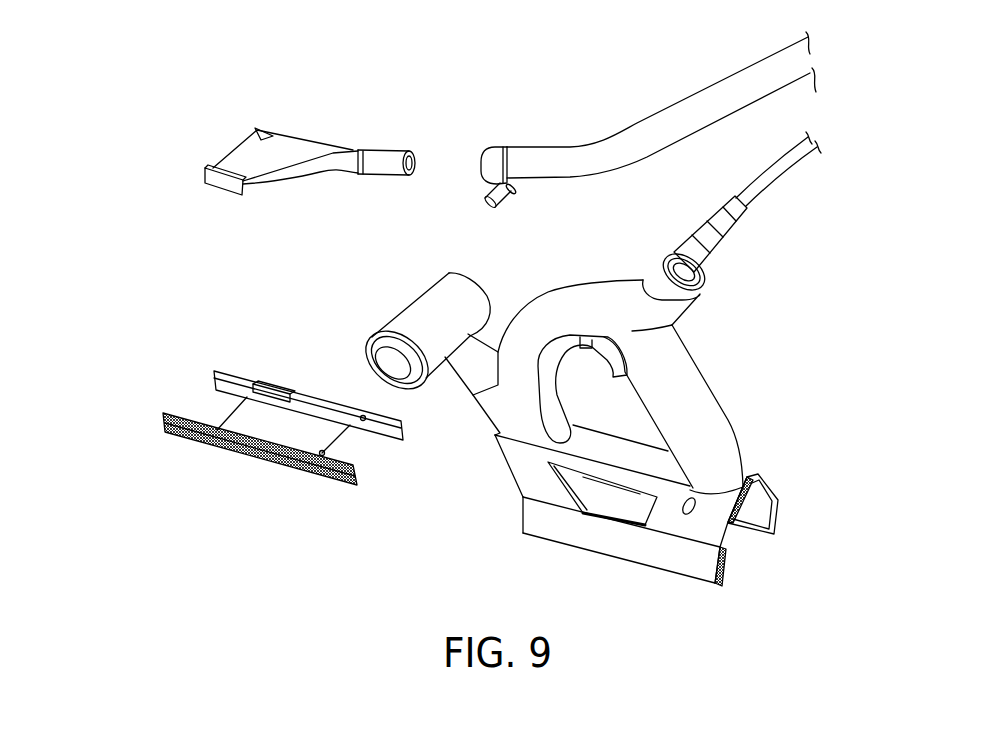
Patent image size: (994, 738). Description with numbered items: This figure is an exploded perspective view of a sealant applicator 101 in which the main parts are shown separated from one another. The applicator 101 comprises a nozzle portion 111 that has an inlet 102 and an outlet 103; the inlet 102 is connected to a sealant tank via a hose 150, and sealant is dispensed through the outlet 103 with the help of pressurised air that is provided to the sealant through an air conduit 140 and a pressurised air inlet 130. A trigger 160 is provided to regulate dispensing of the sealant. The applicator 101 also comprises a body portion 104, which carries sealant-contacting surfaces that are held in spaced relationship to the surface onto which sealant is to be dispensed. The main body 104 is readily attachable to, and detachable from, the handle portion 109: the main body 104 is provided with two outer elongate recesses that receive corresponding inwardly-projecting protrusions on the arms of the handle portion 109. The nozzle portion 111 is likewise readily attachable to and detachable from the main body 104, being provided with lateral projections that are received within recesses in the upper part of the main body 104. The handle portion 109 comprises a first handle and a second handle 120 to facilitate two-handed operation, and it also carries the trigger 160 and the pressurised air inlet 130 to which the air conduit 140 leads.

The sealant applicator 101 is at (437, 302).
The inlet 102 is at (413, 158).
The outlet 103 is at (235, 148).
The body portion 104 is at (243, 468).
The handle portion 109 is at (505, 517).
The nozzle portion 111 is at (259, 159).
The second handle 120 is at (685, 402).
The pressurised air inlet 130 is at (700, 280).
The air conduit 140 is at (757, 201).
The hose 150 is at (642, 125).
The trigger 160 is at (610, 361).